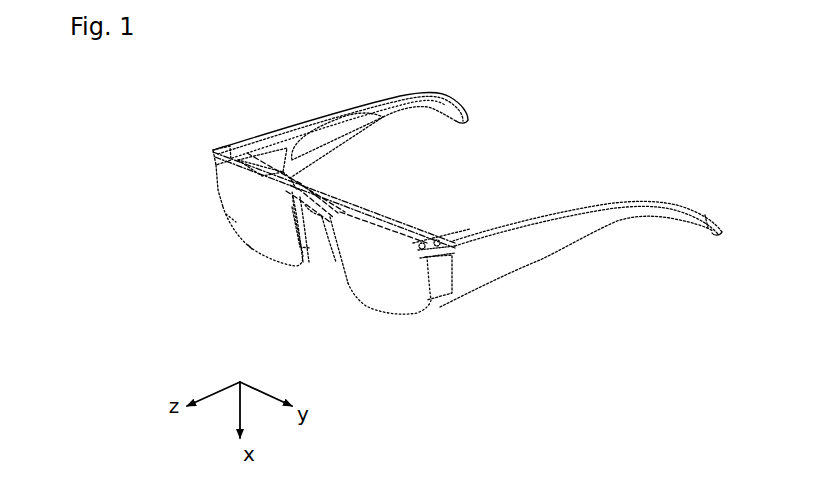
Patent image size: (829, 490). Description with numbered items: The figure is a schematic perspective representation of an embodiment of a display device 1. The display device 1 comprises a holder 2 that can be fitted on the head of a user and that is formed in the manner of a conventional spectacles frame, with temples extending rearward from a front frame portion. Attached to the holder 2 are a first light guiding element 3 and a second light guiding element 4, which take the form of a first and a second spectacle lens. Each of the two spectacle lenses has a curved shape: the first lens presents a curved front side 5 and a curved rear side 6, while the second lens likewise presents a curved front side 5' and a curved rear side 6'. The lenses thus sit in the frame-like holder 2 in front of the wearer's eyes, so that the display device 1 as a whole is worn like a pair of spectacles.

The display device 1 is at (211, 156).
The holder 2 is at (367, 102).
The first light guiding element 3 is at (366, 306).
The second light guiding element 4 is at (266, 264).
The front side 5 is at (362, 263).
The front side 5' is at (236, 228).
The rear side 6 is at (557, 250).
The rear side 6' is at (314, 187).